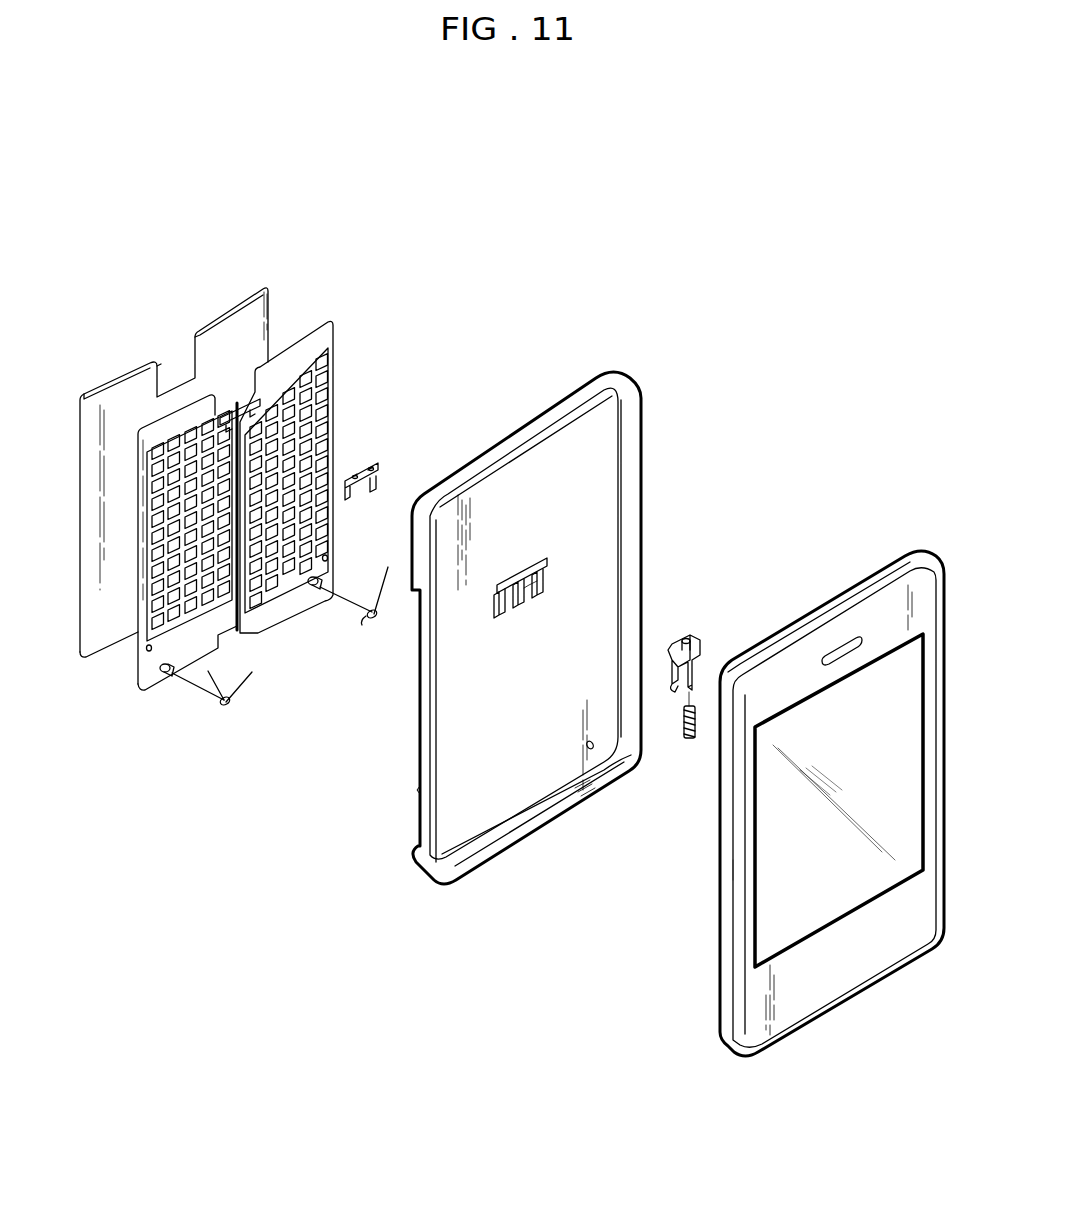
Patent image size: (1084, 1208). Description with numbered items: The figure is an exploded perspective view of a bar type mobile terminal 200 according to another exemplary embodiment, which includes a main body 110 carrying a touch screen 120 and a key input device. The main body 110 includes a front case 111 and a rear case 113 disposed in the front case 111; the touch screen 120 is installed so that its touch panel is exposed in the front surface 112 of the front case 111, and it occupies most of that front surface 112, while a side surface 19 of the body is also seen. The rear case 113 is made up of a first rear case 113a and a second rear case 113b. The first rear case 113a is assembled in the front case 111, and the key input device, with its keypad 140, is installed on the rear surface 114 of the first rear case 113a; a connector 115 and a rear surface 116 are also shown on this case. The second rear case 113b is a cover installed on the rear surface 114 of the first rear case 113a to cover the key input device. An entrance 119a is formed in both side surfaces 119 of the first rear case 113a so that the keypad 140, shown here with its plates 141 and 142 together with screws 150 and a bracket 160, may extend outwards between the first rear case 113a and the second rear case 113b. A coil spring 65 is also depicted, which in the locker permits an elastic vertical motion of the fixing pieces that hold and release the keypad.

The mobile terminal 200 is at (832, 243).
The main body 110 is at (514, 696).
The front case 111 is at (764, 803).
The front surface 112 is at (850, 972).
The rear case 113 is at (491, 863).
The first rear case 113a is at (427, 873).
The second rear case 113b is at (129, 361).
The rear surface 114 is at (420, 738).
The connector 115 is at (522, 560).
The rear surface 116 is at (601, 481).
The side surfaces 119 is at (418, 692).
The entrance 119a is at (413, 795).
The touch screen 120 is at (768, 833).
The side surface 19 is at (692, 871).
The coil spring 65 is at (690, 740).
The keypad 140 is at (328, 324).
The first antenna plate 141 is at (147, 687).
The second antenna plate 142 is at (330, 338).
The screws 150 is at (224, 705).
The bracket 160 is at (384, 446).